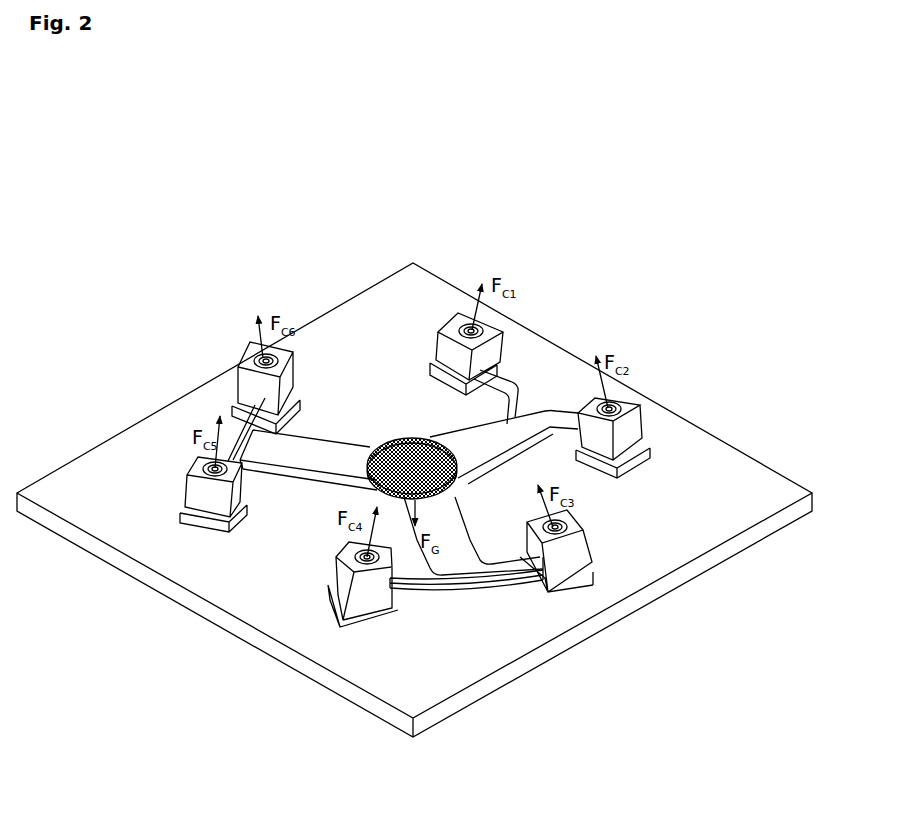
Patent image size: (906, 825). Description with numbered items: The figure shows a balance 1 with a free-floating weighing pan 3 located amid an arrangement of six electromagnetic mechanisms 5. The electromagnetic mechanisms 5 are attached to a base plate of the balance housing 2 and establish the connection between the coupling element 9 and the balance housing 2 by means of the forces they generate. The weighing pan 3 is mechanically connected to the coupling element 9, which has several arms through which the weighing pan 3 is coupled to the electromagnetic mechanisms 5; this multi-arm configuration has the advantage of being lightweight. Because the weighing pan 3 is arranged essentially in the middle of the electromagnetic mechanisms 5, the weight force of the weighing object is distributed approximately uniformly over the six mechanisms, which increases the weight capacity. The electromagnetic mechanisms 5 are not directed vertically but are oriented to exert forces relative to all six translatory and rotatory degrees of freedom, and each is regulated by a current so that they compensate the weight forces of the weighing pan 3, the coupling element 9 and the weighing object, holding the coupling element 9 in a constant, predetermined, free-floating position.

The balance 1 is at (218, 240).
The balance housing 2 is at (722, 485).
The weighing pan 3 is at (440, 500).
The electromagnetic mechanisms 5 is at (450, 327).
The coupling element 9 is at (322, 450).